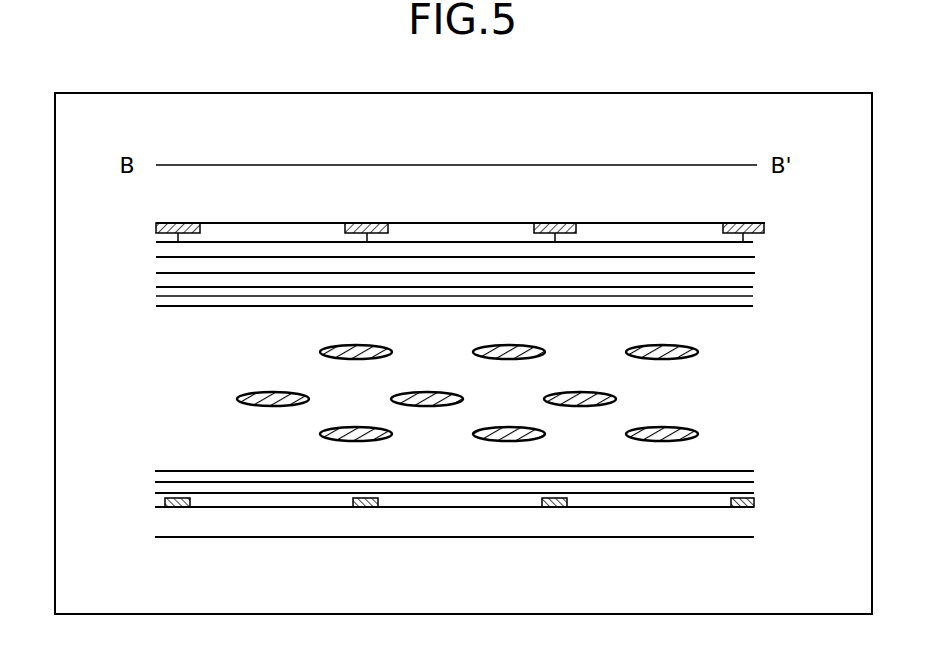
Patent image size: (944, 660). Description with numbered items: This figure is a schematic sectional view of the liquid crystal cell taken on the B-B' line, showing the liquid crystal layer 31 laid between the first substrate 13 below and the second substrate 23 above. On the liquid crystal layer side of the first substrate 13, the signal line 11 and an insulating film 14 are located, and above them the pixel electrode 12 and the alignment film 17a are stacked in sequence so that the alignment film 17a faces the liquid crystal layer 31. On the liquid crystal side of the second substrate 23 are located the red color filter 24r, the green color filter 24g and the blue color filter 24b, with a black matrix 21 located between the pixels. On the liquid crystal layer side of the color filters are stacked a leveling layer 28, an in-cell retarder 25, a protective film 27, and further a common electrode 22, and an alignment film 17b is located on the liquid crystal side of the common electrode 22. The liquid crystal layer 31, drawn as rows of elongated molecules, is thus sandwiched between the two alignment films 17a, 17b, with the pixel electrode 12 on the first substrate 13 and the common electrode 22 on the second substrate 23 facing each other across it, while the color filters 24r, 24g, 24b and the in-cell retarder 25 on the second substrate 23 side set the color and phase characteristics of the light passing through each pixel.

The signal line 11 is at (365, 510).
The pixel electrode 12 is at (755, 487).
The first substrate 13 is at (227, 520).
The insulating film 14 is at (648, 498).
The alignment film 17a is at (755, 475).
The alignment film 17b is at (750, 302).
The black matrix 21 is at (180, 222).
The common electrode 22 is at (160, 292).
The second substrate 23 is at (558, 172).
The red color filter 24r is at (263, 230).
The green color filter 24g is at (452, 228).
The blue color filter 24b is at (642, 228).
The in-cell retarder 25 is at (753, 265).
The protective film 27 is at (750, 282).
The leveling layer 28 is at (753, 248).
The liquid crystal layer 31 is at (665, 432).